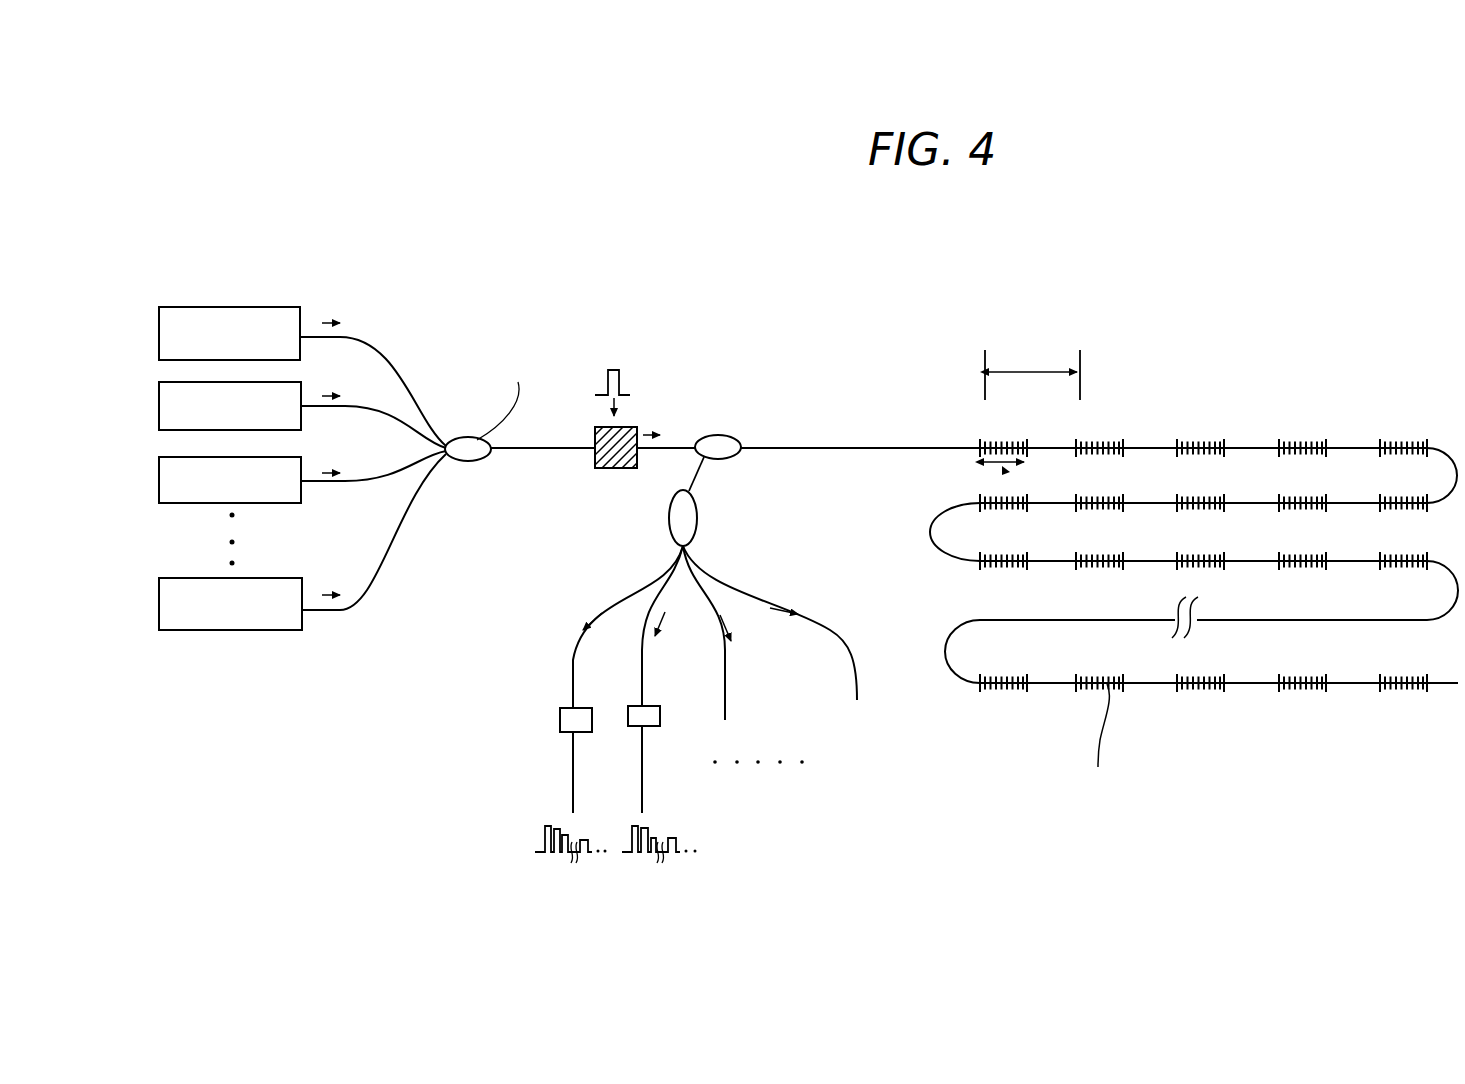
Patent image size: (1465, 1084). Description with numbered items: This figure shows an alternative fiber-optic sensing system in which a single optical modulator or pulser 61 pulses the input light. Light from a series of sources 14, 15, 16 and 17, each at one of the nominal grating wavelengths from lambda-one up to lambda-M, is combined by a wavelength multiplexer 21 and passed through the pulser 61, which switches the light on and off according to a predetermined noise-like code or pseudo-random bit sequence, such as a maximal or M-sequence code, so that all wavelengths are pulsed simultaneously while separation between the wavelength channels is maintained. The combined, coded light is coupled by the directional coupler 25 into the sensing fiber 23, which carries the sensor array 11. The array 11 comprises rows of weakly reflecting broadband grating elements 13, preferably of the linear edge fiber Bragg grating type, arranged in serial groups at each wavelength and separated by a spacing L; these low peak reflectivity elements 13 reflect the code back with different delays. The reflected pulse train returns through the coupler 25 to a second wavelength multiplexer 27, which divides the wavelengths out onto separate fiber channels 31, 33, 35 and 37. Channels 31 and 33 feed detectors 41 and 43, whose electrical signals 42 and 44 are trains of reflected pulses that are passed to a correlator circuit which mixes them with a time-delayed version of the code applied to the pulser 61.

The sensor array 11 is at (1190, 352).
The grating elements 13 is at (1203, 653).
The laser source 14 is at (241, 284).
The laser source 15 is at (159, 399).
The laser source 16 is at (159, 475).
The laser source 17 is at (159, 600).
The wavelength multiplexer 21 is at (479, 411).
The sensing fiber 23 is at (947, 418).
The directional coupler 25 is at (717, 435).
The second wavelength multiplexer 27 is at (697, 521).
The fiber channel 31 is at (573, 680).
The fiber channel 33 is at (642, 680).
The fiber channel 35 is at (725, 680).
The fiber channel 37 is at (857, 675).
The detector 41 is at (560, 720).
The electrical signal 42 is at (543, 840).
The detector 43 is at (660, 716).
The electrical signal 44 is at (646, 836).
The pulser 61 is at (634, 428).